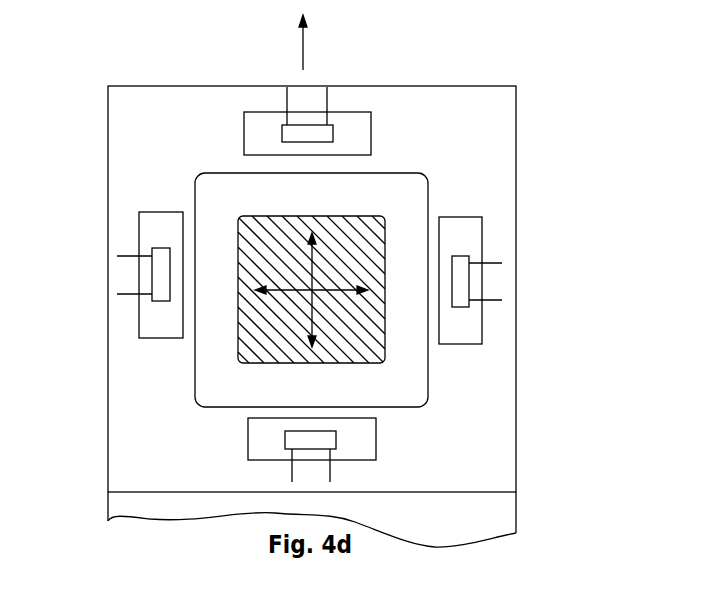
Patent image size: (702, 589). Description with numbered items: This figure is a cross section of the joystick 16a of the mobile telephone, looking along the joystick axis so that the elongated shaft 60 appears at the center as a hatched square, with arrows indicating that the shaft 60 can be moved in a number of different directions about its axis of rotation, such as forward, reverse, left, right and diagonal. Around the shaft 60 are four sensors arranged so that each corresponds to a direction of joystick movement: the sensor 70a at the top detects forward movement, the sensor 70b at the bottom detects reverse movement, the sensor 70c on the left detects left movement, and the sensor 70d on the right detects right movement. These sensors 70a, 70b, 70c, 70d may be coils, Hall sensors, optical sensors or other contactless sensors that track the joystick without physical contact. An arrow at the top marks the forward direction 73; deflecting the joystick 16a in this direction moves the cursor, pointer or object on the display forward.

The joystick 16a is at (142, 70).
The forward direction 73 is at (285, 42).
The elongated shaft 60 is at (377, 213).
The sensor 70a is at (333, 134).
The sensor 70b is at (285, 440).
The sensor 70c is at (160, 248).
The sensor 70d is at (458, 307).